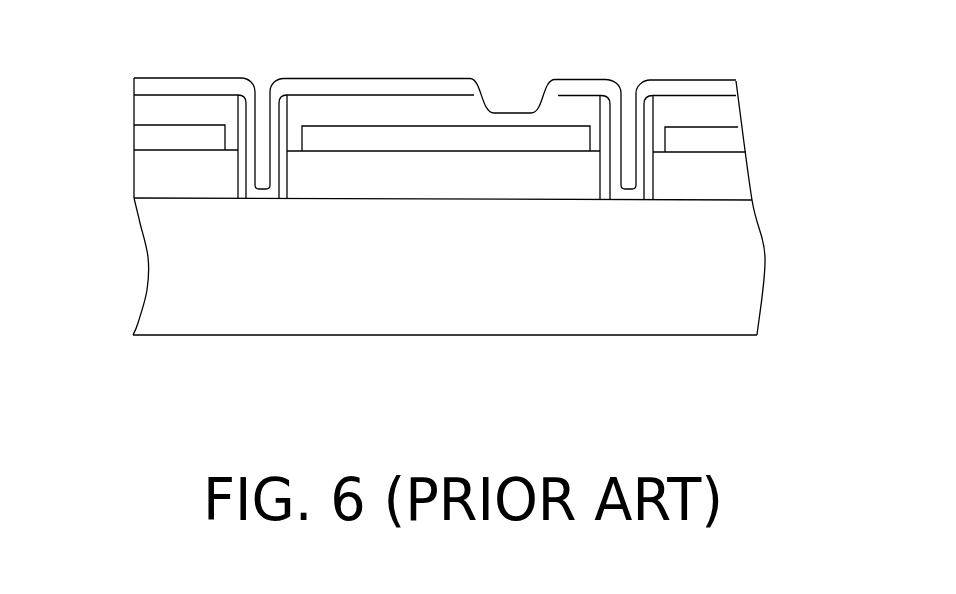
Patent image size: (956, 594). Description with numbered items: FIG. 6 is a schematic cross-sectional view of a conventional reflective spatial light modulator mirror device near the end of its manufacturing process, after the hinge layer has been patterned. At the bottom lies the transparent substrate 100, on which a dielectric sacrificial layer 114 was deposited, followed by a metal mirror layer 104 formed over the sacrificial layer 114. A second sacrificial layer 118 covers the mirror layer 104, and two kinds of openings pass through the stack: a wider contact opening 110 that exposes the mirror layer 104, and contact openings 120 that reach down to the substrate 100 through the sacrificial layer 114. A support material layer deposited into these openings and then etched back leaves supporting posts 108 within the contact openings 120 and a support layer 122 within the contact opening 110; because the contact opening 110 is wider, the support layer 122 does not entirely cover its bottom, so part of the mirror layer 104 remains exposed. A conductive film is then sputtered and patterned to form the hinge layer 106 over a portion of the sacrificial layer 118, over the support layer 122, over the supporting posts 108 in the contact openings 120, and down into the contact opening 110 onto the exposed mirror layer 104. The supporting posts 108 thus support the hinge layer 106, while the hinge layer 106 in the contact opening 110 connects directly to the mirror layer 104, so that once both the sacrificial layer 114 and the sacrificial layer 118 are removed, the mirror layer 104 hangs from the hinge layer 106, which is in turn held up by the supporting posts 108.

The substrate 100 is at (747, 285).
The mirror layer 104 is at (157, 133).
The hinge layer 106 is at (725, 90).
The supporting posts 108 is at (241, 189).
The contact opening 110 is at (514, 97).
The sacrificial layer 114 is at (158, 175).
The sacrificial layer 118 is at (157, 114).
The contact openings 120 is at (260, 88).
The support layer 122 is at (473, 95).